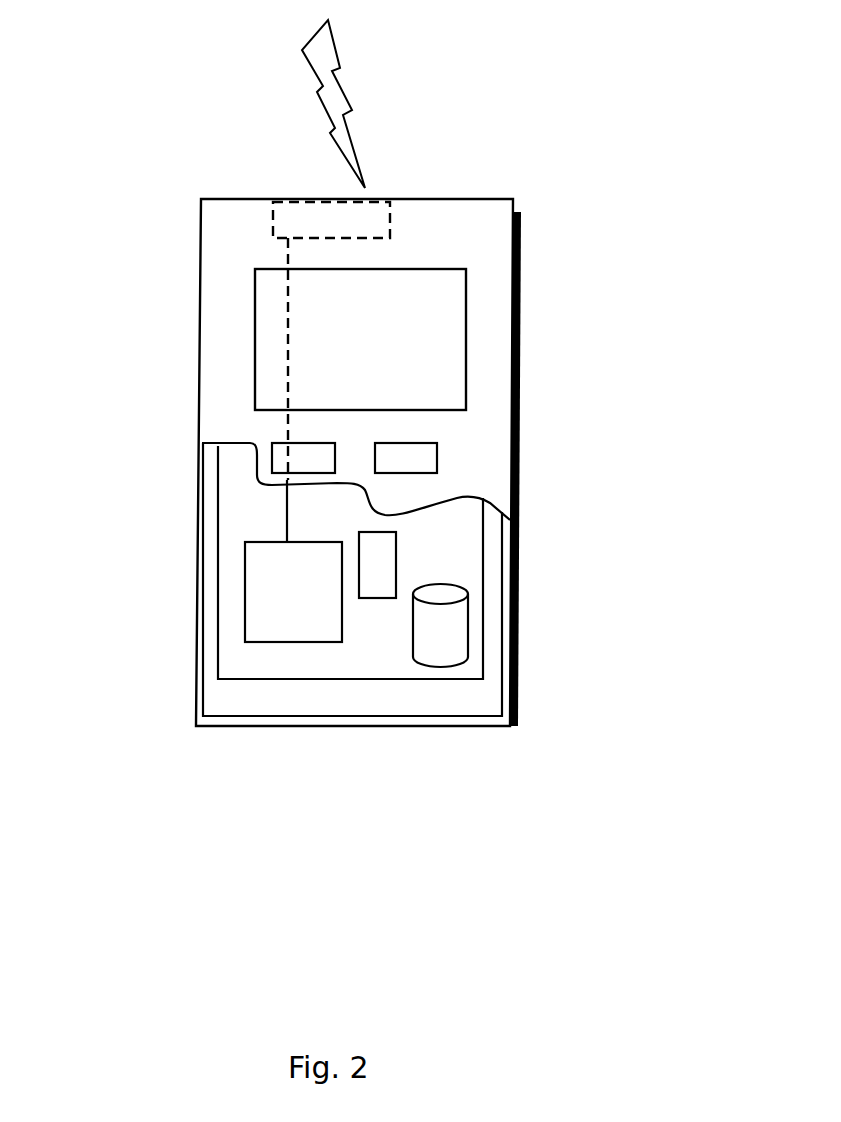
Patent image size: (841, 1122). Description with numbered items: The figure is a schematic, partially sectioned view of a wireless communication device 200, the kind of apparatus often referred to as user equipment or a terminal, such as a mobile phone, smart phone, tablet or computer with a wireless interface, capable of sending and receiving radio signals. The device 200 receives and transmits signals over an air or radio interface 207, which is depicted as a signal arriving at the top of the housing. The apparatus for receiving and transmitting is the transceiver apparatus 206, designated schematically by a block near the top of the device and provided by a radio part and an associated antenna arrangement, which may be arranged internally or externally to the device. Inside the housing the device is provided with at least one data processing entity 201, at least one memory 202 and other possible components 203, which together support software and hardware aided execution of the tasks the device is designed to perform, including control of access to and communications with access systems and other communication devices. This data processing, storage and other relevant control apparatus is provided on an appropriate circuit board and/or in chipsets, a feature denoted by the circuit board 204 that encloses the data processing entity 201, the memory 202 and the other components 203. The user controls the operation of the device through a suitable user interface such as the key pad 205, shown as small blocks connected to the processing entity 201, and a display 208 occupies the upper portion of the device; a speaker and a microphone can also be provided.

The communication device 200 is at (203, 241).
The data processing entity 201 is at (252, 575).
The memory 202 is at (433, 635).
The other possible components 203 is at (377, 547).
The circuit board 204 is at (243, 662).
The key pad 205 is at (277, 458).
The transceiver apparatus 206 is at (378, 215).
The radio interface 207 is at (369, 124).
The display 208 is at (272, 324).